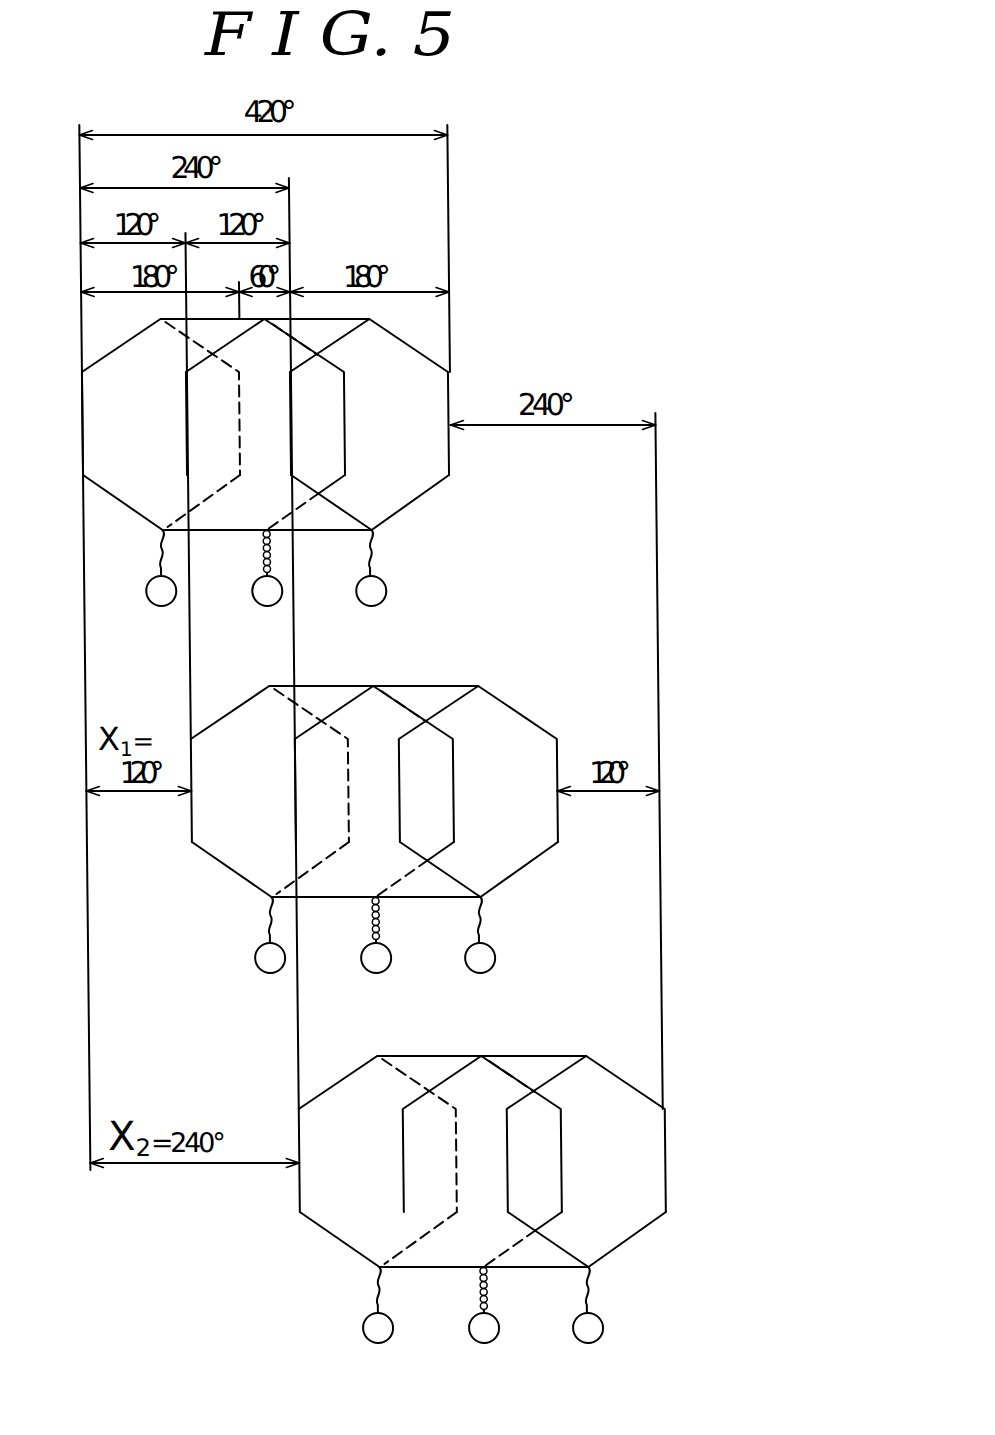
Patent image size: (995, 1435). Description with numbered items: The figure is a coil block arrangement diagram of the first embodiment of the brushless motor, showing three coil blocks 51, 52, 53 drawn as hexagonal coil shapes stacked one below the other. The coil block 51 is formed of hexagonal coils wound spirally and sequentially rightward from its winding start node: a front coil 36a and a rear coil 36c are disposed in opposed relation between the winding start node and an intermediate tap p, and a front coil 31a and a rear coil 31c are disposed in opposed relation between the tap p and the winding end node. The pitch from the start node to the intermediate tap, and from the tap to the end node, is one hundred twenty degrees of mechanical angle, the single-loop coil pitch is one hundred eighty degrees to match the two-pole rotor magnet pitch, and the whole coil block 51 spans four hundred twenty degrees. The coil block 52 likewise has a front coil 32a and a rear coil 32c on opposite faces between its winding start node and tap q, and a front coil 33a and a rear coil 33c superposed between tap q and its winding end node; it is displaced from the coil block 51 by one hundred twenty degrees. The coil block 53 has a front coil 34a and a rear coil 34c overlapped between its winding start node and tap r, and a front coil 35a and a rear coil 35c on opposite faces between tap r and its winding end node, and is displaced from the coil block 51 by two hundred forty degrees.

The coil block 51 is at (244, 462).
The coil block 52 is at (350, 829).
The coil block 53 is at (457, 1199).
The front coil 36a is at (123, 530).
The rear coil 36c is at (204, 530).
The front coil 31a is at (331, 530).
The rear coil 31c is at (410, 530).
The front coil 32a is at (232, 897).
The rear coil 32c is at (313, 897).
The front coil 33a is at (440, 897).
The rear coil 33c is at (519, 897).
The front coil 34a is at (340, 1267).
The rear coil 34c is at (421, 1267).
The front coil 35a is at (548, 1267).
The rear coil 35c is at (627, 1267).